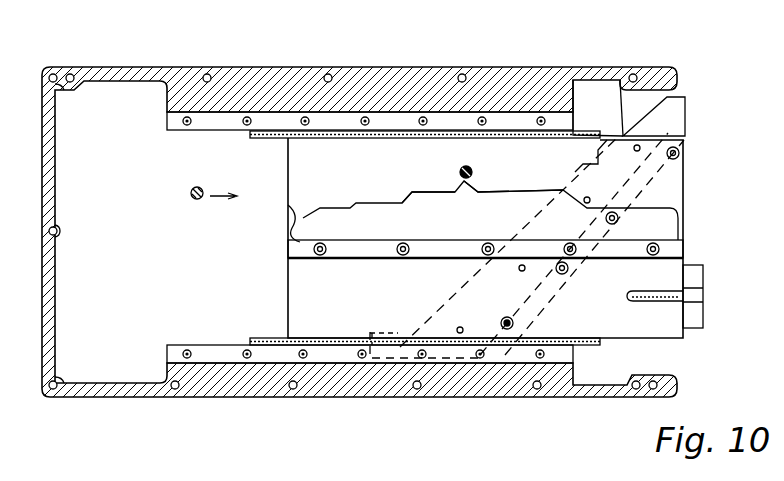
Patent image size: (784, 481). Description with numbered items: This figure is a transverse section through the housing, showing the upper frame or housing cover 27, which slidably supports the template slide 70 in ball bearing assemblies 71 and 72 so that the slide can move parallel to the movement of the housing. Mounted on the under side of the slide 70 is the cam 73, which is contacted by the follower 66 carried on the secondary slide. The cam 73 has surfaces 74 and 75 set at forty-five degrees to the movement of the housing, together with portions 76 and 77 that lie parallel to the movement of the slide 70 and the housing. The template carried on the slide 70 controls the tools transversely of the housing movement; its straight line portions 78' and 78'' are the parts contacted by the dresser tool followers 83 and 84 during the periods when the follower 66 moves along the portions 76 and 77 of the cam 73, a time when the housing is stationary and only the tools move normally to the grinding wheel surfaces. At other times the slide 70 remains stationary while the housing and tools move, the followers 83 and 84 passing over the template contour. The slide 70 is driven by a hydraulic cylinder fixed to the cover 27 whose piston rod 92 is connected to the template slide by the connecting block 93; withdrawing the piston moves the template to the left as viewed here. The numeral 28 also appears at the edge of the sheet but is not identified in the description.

The upper frame or housing cover 27 is at (485, 67).
The follower 66 is at (393, 328).
The template slide 70 is at (297, 198).
The ball bearing assembly 71 is at (263, 139).
The ball bearing assembly 72 is at (272, 337).
The cam 73 is at (678, 115).
The cam surface 74 is at (460, 289).
The cam surface 75 is at (631, 128).
The cam portion 76 is at (375, 332).
The cam portion 77 is at (597, 153).
The straight line portion of template 78' is at (416, 179).
The straight line portion of template 78'' is at (513, 177).
The template follower 83 is at (470, 168).
The template follower 84 is at (199, 188).
The piston rod 92 is at (657, 303).
The connecting block 93 is at (693, 318).
The cover 28 is at (406, 470).